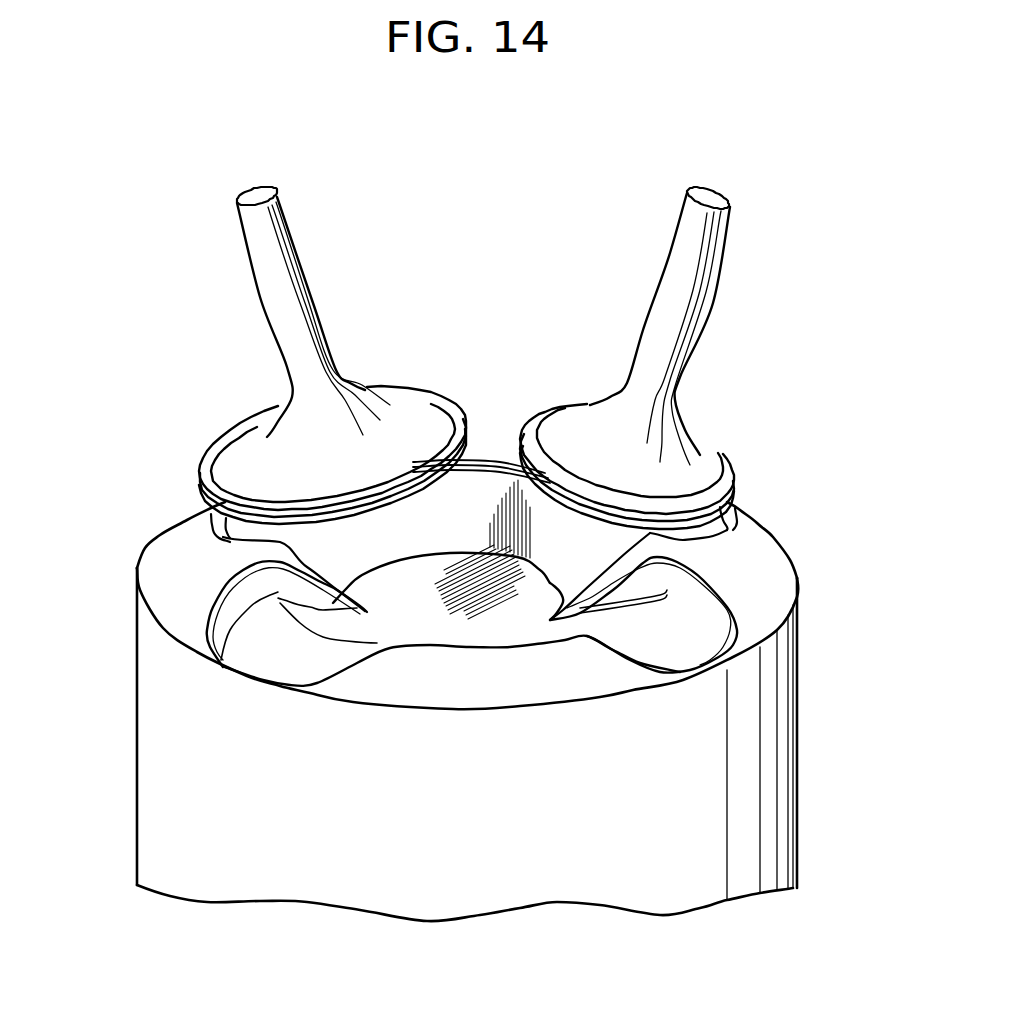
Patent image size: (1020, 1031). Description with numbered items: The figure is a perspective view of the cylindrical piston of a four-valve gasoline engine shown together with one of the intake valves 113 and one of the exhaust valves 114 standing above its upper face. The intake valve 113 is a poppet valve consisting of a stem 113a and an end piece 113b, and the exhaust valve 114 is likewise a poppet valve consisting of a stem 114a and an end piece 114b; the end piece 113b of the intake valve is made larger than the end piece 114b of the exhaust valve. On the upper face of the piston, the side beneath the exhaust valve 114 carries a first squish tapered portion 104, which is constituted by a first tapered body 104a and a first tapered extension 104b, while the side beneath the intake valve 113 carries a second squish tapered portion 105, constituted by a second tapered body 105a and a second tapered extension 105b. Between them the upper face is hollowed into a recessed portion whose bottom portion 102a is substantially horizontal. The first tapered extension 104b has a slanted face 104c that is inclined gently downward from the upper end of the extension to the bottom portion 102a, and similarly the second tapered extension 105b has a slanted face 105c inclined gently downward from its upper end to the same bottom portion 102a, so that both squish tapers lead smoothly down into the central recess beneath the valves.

The bottom portion 102a is at (455, 622).
The first squish tapered portion 104 is at (787, 537).
The first tapered body 104a is at (768, 577).
The first tapered extension 104b is at (652, 580).
The slanted face 104c is at (580, 607).
The second squish tapered portion 105 is at (135, 566).
The second tapered body 105a is at (175, 560).
The second tapered extension 105b is at (273, 582).
The slanted face 105c is at (320, 598).
The intake valve 113 is at (275, 338).
The stem 113a is at (255, 458).
The end piece 113b is at (263, 248).
The exhaust valve 114 is at (695, 344).
The stem 114a is at (693, 466).
The end piece 114b is at (700, 258).